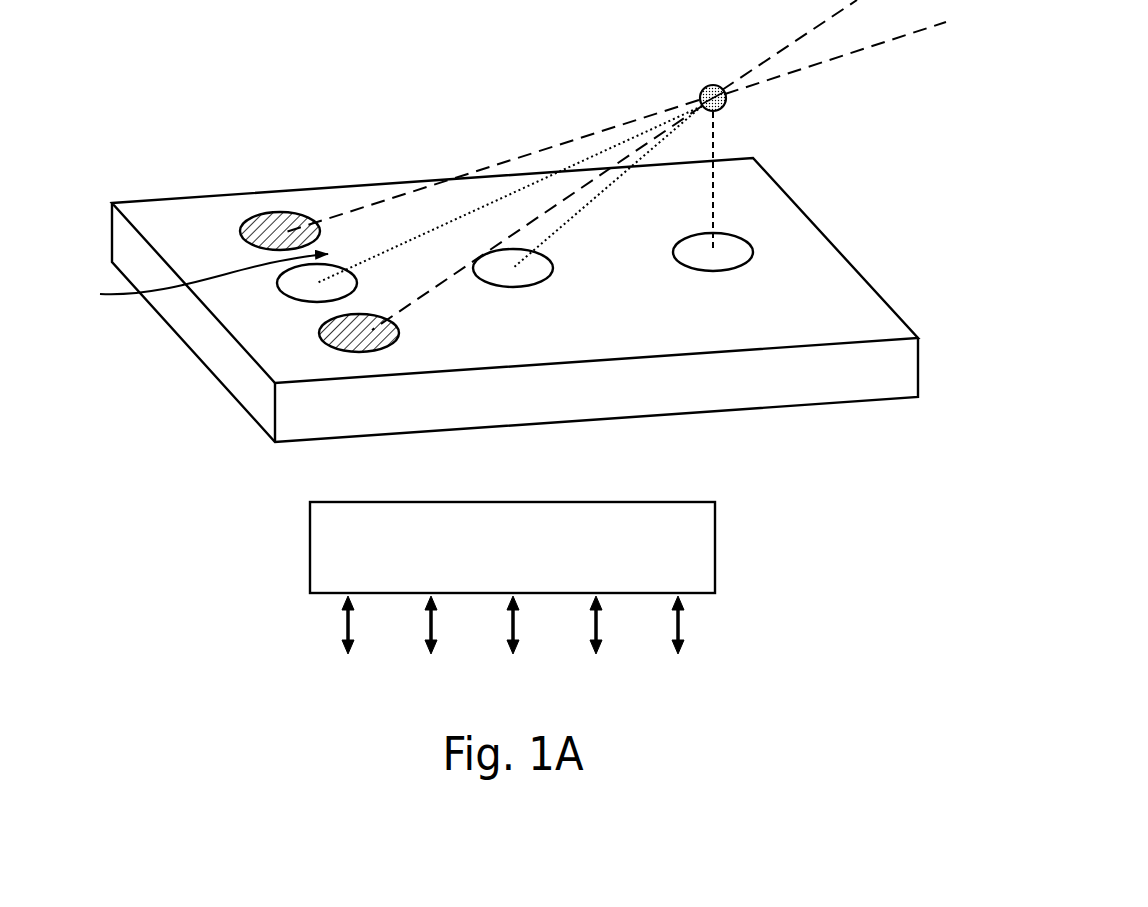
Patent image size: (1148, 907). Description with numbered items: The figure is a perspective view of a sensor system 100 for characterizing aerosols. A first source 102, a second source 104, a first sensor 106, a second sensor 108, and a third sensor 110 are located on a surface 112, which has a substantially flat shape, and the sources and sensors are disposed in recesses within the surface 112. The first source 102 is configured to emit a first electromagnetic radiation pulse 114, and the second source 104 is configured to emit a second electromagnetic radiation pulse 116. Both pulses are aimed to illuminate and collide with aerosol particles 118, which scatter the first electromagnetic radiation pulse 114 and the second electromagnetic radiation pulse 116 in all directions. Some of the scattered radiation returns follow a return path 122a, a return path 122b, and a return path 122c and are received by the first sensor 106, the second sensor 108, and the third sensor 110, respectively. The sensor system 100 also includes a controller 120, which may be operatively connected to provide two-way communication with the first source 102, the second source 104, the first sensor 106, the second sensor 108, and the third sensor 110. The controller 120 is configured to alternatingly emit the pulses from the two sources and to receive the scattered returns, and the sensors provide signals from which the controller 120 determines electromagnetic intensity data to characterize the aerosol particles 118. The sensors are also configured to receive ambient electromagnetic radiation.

The sensor system 100 is at (291, 89).
The first source 102 is at (342, 327).
The second source 104 is at (271, 221).
The first sensor 106 is at (277, 283).
The second sensor 108 is at (521, 288).
The third sensor 110 is at (732, 270).
The surface 112 is at (867, 275).
The first electromagnetic radiation pulse 114 is at (430, 318).
The second electromagnetic radiation pulse 116 is at (538, 142).
The aerosol particles 118 is at (698, 82).
The controller 120 is at (495, 576).
The return path 122a is at (185, 278).
The return path 122b is at (594, 226).
The return path 122c is at (740, 180).